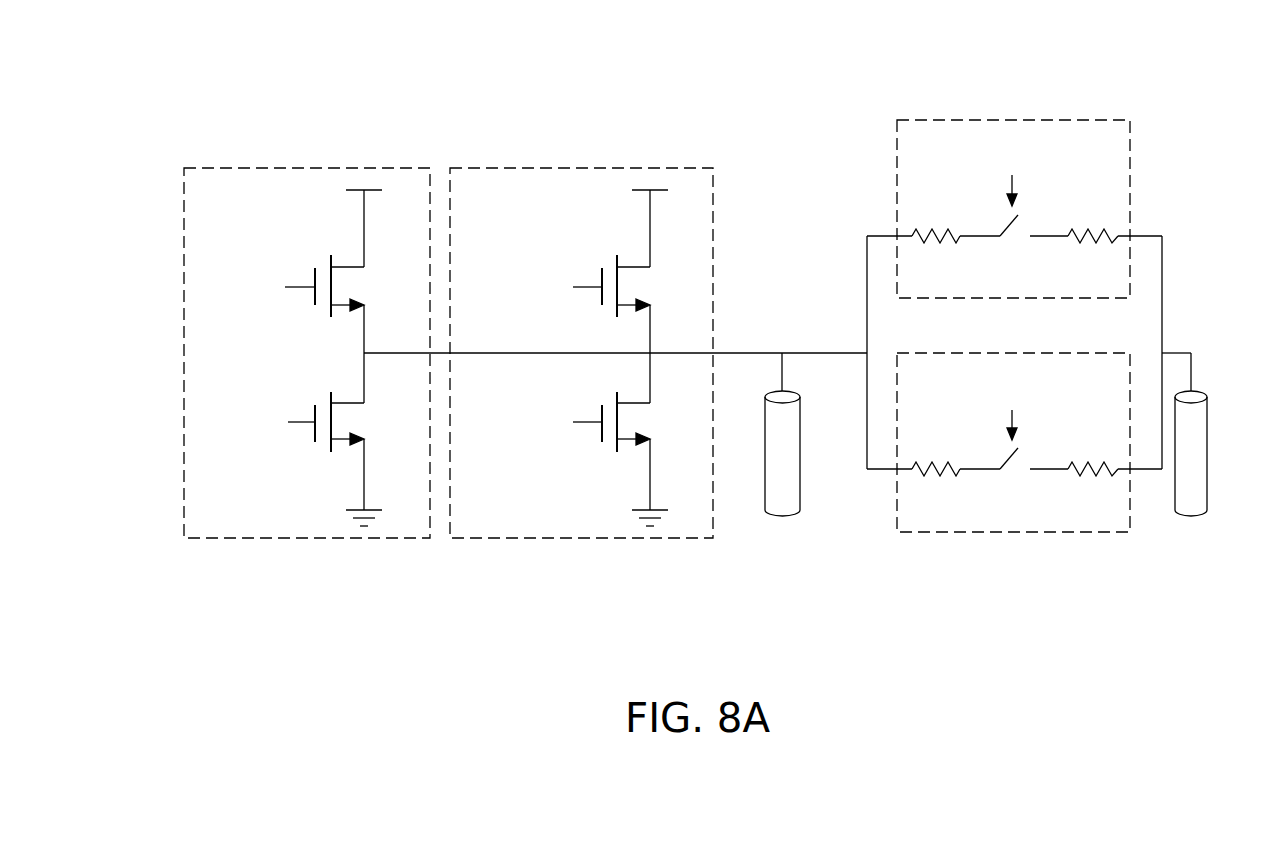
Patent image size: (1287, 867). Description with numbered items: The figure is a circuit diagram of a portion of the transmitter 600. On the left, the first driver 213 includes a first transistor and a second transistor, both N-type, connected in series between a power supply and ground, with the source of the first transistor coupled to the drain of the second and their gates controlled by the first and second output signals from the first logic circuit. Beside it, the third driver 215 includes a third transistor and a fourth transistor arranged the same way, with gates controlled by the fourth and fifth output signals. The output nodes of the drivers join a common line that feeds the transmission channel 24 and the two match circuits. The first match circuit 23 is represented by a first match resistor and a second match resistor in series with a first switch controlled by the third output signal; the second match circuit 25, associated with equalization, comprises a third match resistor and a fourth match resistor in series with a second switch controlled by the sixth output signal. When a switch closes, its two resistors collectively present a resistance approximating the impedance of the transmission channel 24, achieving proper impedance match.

The transmitter 600 is at (173, 70).
The first driver 213 is at (305, 540).
The third driver 215 is at (570, 540).
The transmission channel 24 is at (800, 448).
The second match circuit 25 is at (1013, 118).
The first match circuit 23 is at (1013, 353).